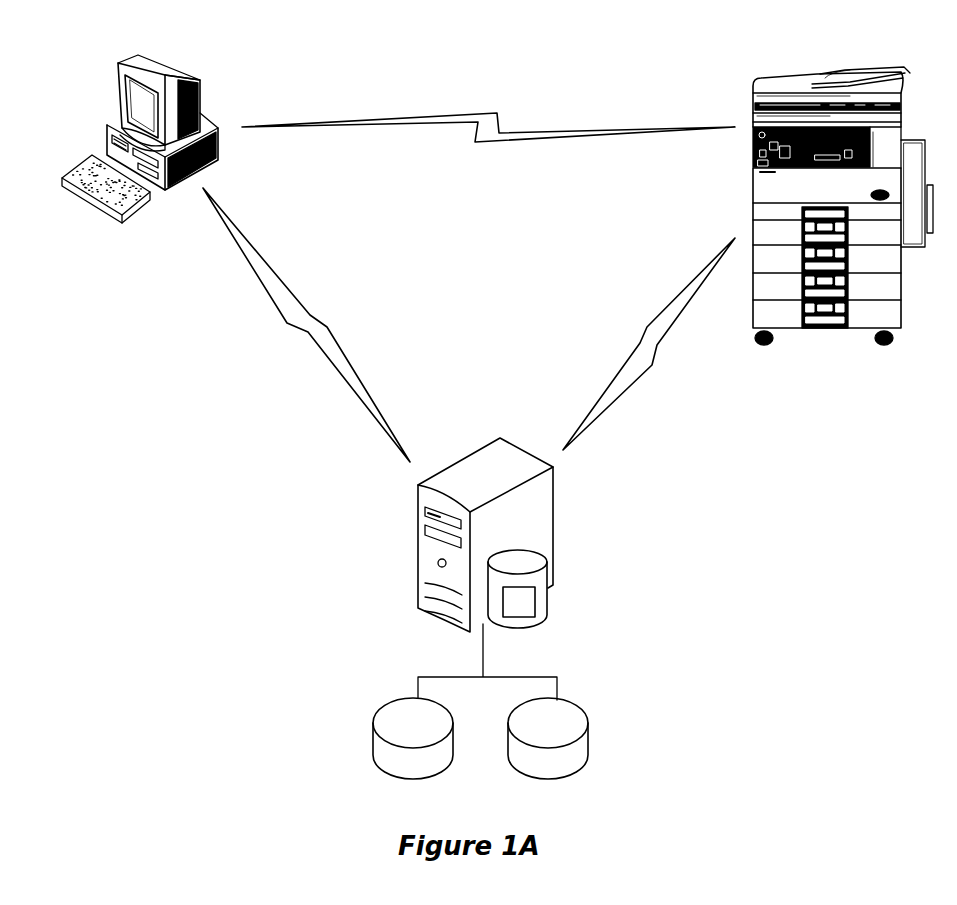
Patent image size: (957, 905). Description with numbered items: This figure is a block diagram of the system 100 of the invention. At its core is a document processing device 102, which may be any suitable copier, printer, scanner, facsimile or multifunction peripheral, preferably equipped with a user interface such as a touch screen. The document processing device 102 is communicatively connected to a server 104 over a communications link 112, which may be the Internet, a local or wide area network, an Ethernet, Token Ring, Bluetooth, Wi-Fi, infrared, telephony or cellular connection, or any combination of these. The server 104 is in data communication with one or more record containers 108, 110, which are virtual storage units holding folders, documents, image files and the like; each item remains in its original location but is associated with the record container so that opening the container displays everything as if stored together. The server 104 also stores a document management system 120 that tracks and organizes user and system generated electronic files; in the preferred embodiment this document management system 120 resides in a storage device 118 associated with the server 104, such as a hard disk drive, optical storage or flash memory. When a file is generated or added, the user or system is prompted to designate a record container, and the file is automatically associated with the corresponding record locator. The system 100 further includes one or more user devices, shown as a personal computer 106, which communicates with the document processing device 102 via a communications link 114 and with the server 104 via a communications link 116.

The system 100 is at (624, 24).
The document processing device 102 is at (906, 110).
The server 104 is at (504, 439).
The personal computer 106 is at (203, 86).
The record container 108 is at (440, 704).
The record container 110 is at (580, 708).
The communications link 112 is at (645, 326).
The communications link 114 is at (503, 113).
The communications link 116 is at (312, 307).
The storage device 118 is at (548, 564).
The document management system 120 is at (527, 602).